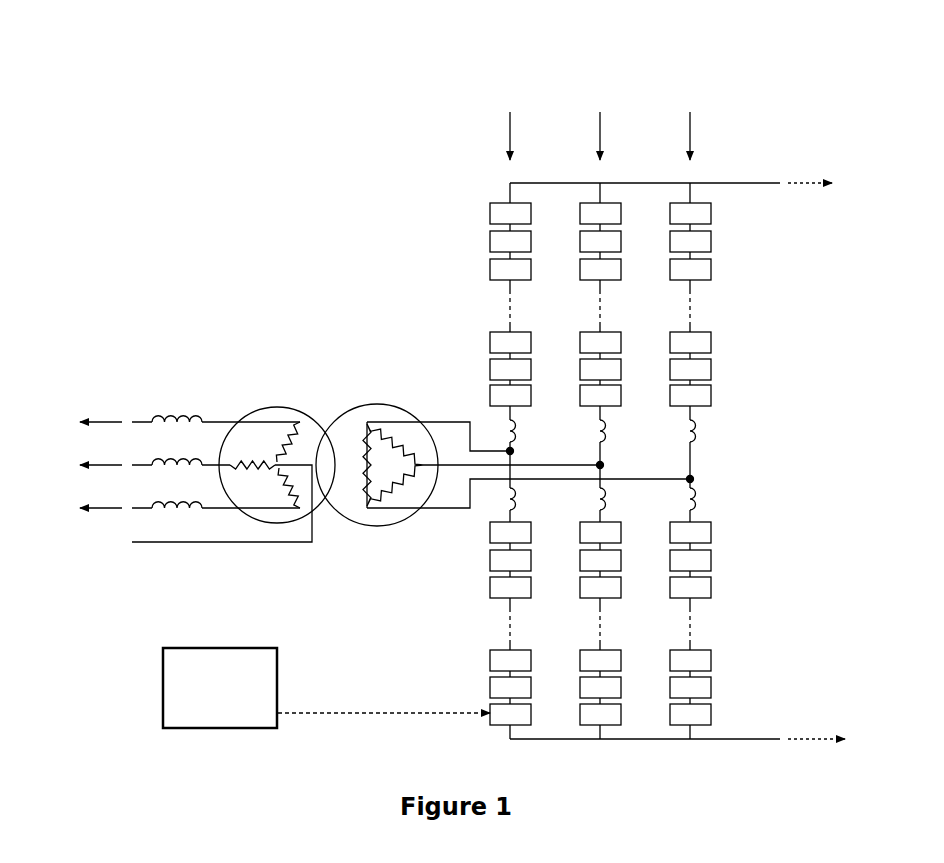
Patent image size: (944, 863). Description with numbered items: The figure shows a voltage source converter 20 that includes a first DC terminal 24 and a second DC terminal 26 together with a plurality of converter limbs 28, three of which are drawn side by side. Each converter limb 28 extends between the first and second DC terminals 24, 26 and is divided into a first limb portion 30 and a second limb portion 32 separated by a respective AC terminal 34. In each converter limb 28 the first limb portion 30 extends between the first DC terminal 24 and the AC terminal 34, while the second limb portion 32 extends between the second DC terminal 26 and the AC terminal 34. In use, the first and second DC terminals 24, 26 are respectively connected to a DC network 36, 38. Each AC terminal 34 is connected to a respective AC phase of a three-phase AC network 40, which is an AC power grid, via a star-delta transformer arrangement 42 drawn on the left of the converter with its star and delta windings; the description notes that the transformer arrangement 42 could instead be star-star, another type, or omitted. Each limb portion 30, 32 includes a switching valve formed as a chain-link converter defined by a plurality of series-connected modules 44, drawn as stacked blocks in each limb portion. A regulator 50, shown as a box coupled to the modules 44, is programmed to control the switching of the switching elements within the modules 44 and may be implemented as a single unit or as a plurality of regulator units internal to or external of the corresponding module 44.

The voltage source converter 20 is at (766, 118).
The first DC terminal 24 is at (699, 188).
The second DC terminal 26 is at (694, 737).
The converter limb 28 is at (600, 122).
The first limb portion 30 is at (736, 321).
The second limb portion 32 is at (726, 592).
The AC terminal 34 is at (513, 449).
The DC network 36 is at (828, 183).
The DC network 38 is at (834, 740).
The three-phase AC network 40 is at (173, 461).
The star-delta transformer arrangement 42 is at (327, 512).
The module 44 is at (500, 237).
The regulator 50 is at (326, 688).